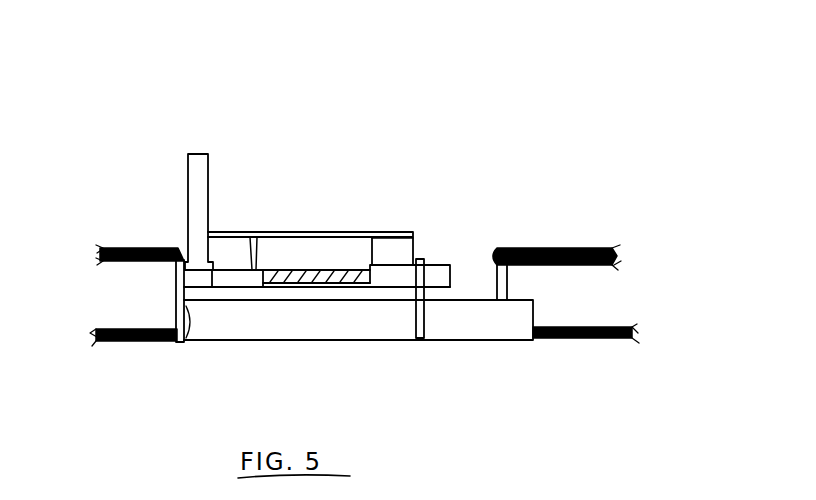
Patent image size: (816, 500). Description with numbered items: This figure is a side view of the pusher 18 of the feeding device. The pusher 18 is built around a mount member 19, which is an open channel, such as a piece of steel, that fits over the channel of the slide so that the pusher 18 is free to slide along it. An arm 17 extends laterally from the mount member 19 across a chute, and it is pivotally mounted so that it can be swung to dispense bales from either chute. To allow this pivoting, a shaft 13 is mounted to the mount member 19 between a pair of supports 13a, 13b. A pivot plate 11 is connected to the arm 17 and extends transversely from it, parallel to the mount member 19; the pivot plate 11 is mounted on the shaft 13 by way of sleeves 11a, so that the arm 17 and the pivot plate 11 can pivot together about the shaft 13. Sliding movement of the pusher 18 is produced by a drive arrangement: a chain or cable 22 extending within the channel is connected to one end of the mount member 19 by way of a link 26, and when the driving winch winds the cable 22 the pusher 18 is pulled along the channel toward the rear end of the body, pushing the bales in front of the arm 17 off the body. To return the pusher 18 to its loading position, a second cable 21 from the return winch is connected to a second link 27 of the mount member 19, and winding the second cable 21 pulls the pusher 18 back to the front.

The pusher 18 is at (435, 162).
The mount member 19 is at (462, 340).
The second link 27 is at (170, 263).
The second cable 21 is at (133, 242).
The chain or cable 22 is at (550, 248).
The link 26 is at (511, 282).
The arm 17 is at (208, 178).
The pivot plate 11 is at (395, 232).
The sleeves 11a is at (258, 230).
The support 13b is at (187, 340).
The shaft 13 is at (297, 282).
The support 13a is at (397, 340).